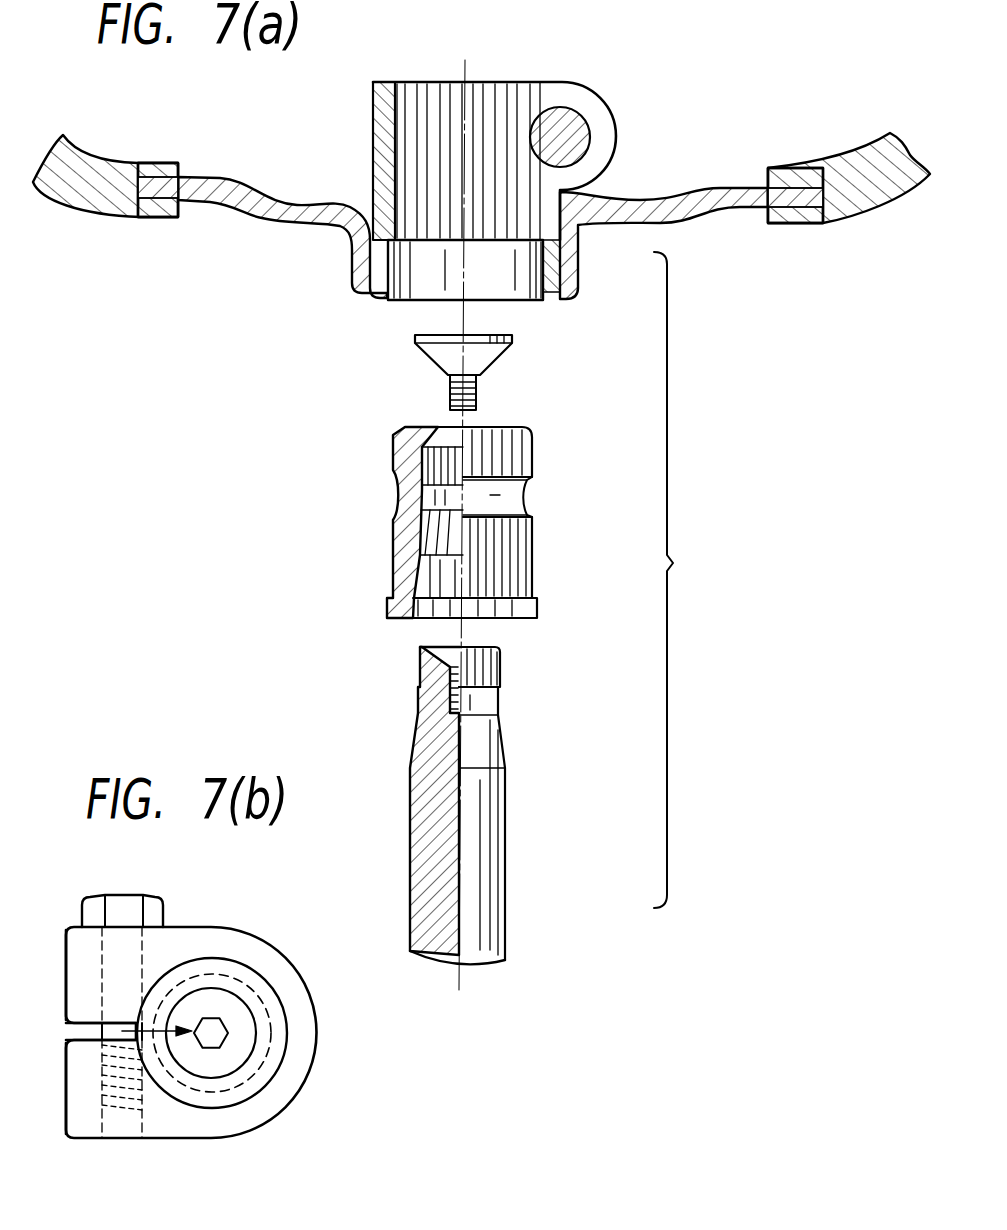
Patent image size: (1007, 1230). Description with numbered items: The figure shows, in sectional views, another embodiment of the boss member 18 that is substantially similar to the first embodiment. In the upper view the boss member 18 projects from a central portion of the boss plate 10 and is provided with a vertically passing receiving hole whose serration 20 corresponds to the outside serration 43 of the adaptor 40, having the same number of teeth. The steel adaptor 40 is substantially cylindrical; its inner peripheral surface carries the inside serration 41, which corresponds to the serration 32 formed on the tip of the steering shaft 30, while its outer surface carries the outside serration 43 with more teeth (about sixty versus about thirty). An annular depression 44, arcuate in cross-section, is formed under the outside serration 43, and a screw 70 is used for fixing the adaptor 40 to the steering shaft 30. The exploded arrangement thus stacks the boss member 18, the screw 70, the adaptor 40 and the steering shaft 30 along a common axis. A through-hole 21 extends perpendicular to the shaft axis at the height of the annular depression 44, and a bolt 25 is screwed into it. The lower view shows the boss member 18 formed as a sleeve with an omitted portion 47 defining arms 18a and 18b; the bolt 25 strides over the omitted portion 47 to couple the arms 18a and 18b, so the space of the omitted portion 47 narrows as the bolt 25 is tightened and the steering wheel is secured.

In FIG. 7A, the boss plate 10 is at (688, 200).
In FIG. 7A, the boss member 18 is at (479, 169).
In FIG. 7B, the boss member 18 is at (169, 1022).
In FIG. 7B, the arm 18a is at (75, 927).
In FIG. 7B, the arm 18b is at (88, 1117).
In FIG. 7A, the serration 20 is at (490, 92).
In FIG. 7B, the through-hole 21 is at (105, 948).
In FIG. 7A, the bolt 25 is at (584, 108).
In FIG. 7B, the bolt 25 is at (135, 915).
In FIG. 7A, the steering shaft 30 is at (499, 805).
In FIG. 7A, the serration 32 is at (500, 665).
In FIG. 7A, the adaptor 40 is at (473, 522).
In FIG. 7B, the adaptor 40 is at (246, 1037).
In FIG. 7A, the inside serration 41 is at (437, 460).
In FIG. 7A, the outside serration 43 is at (527, 455).
In FIG. 7A, the annular depression 44 is at (397, 497).
In FIG. 7B, the annular depression 44 is at (262, 1003).
In FIG. 7B, the omitted portion 47 is at (78, 1030).
In FIG. 7A, the screw 70 is at (495, 350).
In FIG. 7B, the screw 70 is at (228, 1055).